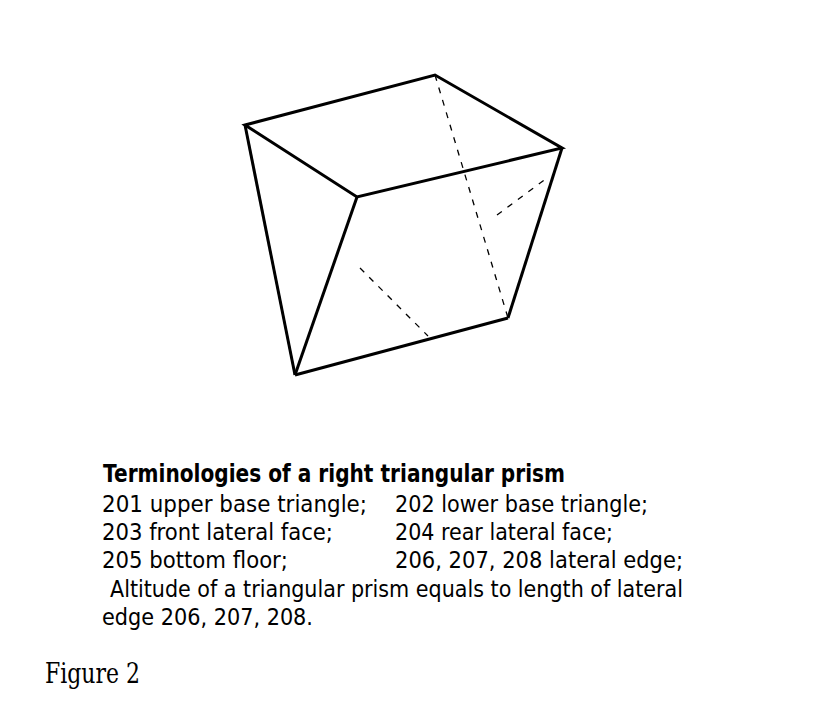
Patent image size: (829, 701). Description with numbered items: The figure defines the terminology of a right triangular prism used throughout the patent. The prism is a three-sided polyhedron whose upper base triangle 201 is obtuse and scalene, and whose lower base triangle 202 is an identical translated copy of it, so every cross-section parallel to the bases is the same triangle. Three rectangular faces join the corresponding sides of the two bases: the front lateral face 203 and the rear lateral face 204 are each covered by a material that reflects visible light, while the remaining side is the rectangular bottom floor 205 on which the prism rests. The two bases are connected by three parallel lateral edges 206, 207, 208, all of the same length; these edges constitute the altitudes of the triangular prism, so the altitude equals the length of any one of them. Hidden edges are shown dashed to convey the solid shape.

The upper base triangle 201 is at (553, 183).
The lower base triangle 202 is at (282, 215).
The front lateral face 203 is at (445, 233).
The rear lateral face 204 is at (402, 117).
The bottom floor 205 is at (415, 317).
The lateral edge 206 is at (283, 108).
The lateral edge 207 is at (360, 184).
The lateral edge 208 is at (342, 368).